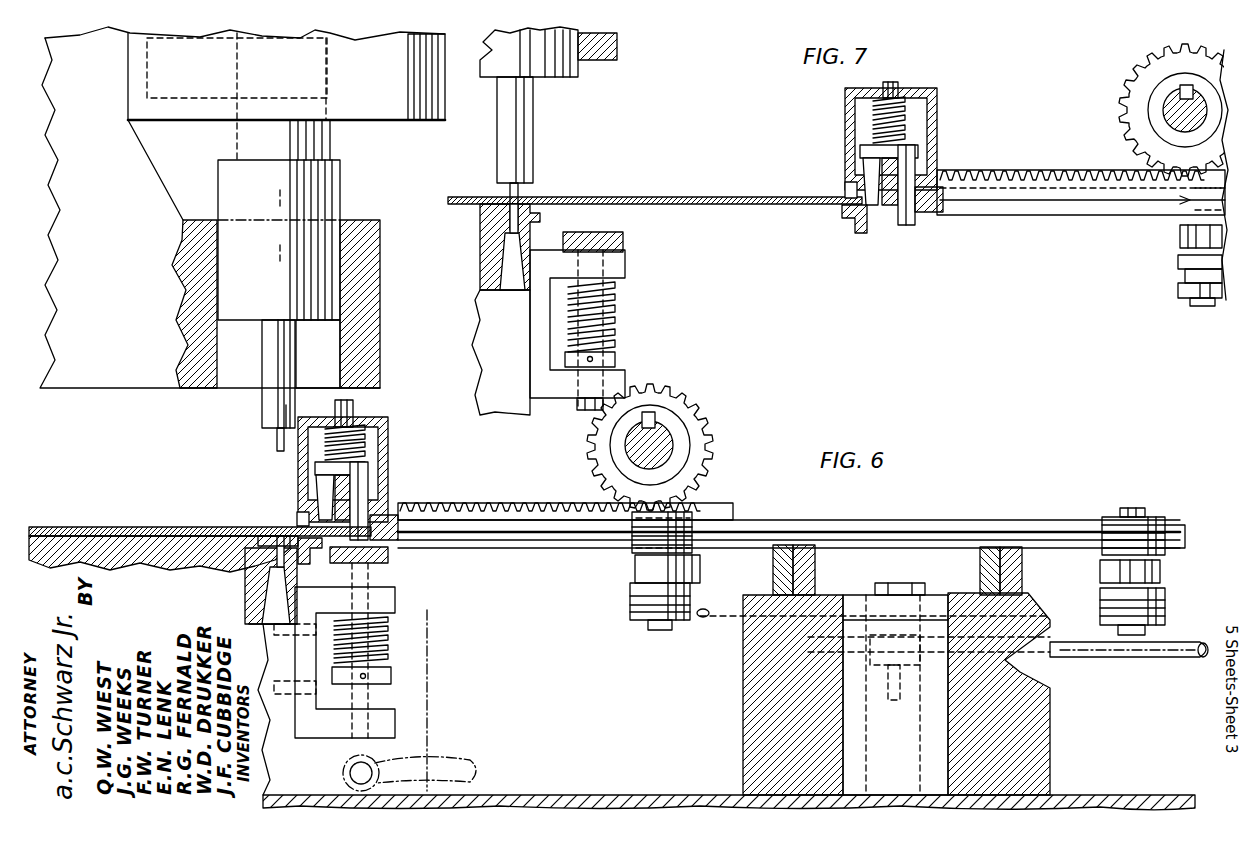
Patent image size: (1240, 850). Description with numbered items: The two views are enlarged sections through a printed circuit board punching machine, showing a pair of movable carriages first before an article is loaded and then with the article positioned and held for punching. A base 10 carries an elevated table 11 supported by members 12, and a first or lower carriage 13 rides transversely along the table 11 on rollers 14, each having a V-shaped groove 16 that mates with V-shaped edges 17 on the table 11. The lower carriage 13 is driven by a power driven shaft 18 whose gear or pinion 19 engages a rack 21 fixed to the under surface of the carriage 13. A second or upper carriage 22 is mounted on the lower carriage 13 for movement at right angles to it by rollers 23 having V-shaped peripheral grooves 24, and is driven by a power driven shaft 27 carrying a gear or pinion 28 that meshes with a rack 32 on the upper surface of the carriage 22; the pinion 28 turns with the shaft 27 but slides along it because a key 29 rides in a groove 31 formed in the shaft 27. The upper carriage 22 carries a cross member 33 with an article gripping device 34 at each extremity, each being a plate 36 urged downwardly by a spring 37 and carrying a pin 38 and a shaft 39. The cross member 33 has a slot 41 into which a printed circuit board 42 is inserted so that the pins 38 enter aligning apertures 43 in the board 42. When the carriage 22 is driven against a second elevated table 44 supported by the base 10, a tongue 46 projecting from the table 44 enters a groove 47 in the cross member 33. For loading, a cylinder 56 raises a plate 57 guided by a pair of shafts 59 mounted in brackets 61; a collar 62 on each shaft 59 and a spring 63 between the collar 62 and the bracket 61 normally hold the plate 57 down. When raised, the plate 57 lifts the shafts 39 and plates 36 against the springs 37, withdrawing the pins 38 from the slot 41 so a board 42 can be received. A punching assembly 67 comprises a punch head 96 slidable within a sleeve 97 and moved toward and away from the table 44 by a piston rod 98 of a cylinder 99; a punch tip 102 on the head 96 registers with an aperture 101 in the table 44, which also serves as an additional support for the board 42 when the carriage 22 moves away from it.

In FIG. 6, the base 10 is at (545, 795).
In FIG. 6, the elevated table 11 is at (730, 622).
In FIG. 6, the members 12 is at (748, 733).
In FIG. 7, the first or lower carriage 13 is at (1180, 237).
In FIG. 6, the first or lower carriage 13 is at (640, 568).
In FIG. 7, the rollers 14 is at (1182, 280).
In FIG. 6, the rollers 14 is at (632, 615).
In FIG. 6, the V-shaped groove 16 is at (632, 598).
In FIG. 6, the V-shaped edges 17 is at (700, 620).
In FIG. 6, the power driven shaft 18 is at (1180, 653).
In FIG. 6, the gear or pinion 19 is at (893, 700).
In FIG. 6, the rack 21 is at (900, 587).
In FIG. 7, the second or upper carriage 22 is at (1048, 212).
In FIG. 6, the second or upper carriage 22 is at (970, 520).
In FIG. 6, the rollers 23 is at (632, 548).
In FIG. 6, the V-shaped peripheral grooves 24 is at (1188, 537).
In FIG. 7, the power driven shaft 27 is at (1150, 138).
In FIG. 6, the power driven shaft 27 is at (628, 444).
In FIG. 7, the gear or pinion 28 is at (1130, 118).
In FIG. 6, the gear or pinion 28 is at (720, 440).
In FIG. 7, the key 29 is at (1180, 92).
In FIG. 6, the key 29 is at (645, 414).
In FIG. 7, the groove 31 is at (1180, 92).
In FIG. 6, the groove 31 is at (648, 412).
In FIG. 7, the rack 32 is at (1020, 170).
In FIG. 6, the rack 32 is at (505, 503).
In FIG. 7, the cross member 33 is at (942, 210).
In FIG. 6, the cross member 33 is at (402, 515).
In FIG. 7, the article gripping device 34 is at (938, 108).
In FIG. 6, the article gripping device 34 is at (390, 456).
In FIG. 7, the plate 36 is at (870, 152).
In FIG. 6, the plate 36 is at (320, 468).
In FIG. 7, the spring 37 is at (875, 112).
In FIG. 6, the spring 37 is at (362, 436).
In FIG. 7, the pin 38 is at (866, 182).
In FIG. 6, the pin 38 is at (322, 492).
In FIG. 7, the shaft 39 is at (905, 226).
In FIG. 6, the shaft 39 is at (365, 492).
In FIG. 7, the slot 41 is at (848, 190).
In FIG. 6, the slot 41 is at (297, 518).
In FIG. 7, the printed circuit board 42 is at (690, 197).
In FIG. 6, the printed circuit board 42 is at (135, 527).
In FIG. 6, the aligning apertures 43 is at (312, 556).
In FIG. 7, the elevated table 44 is at (492, 264).
In FIG. 6, the elevated table 44 is at (150, 560).
In FIG. 7, the tongue 46 is at (542, 215).
In FIG. 6, the tongue 46 is at (266, 570).
In FIG. 7, the groove 47 is at (842, 222).
In FIG. 6, the groove 47 is at (262, 542).
In FIG. 6, the cylinder 56 is at (400, 643).
In FIG. 7, the plate 57 is at (624, 243).
In FIG. 6, the plate 57 is at (390, 556).
In FIG. 7, the shafts 59 is at (627, 268).
In FIG. 7, the brackets 61 is at (548, 392).
In FIG. 7, the collar 62 is at (616, 358).
In FIG. 7, the spring 63 is at (615, 318).
In FIG. 7, the punching assembly 67 is at (372, 180).
In FIG. 7, the punch head 96 is at (274, 358).
In FIG. 7, the sleeve 97 is at (380, 342).
In FIG. 7, the piston rod 98 is at (235, 138).
In FIG. 7, the cylinder 99 is at (440, 113).
In FIG. 7, the aperture 101 is at (510, 216).
In FIG. 6, the aperture 101 is at (274, 556).
In FIG. 7, the punch tip 102 is at (520, 193).
In FIG. 6, the punch tip 102 is at (276, 440).